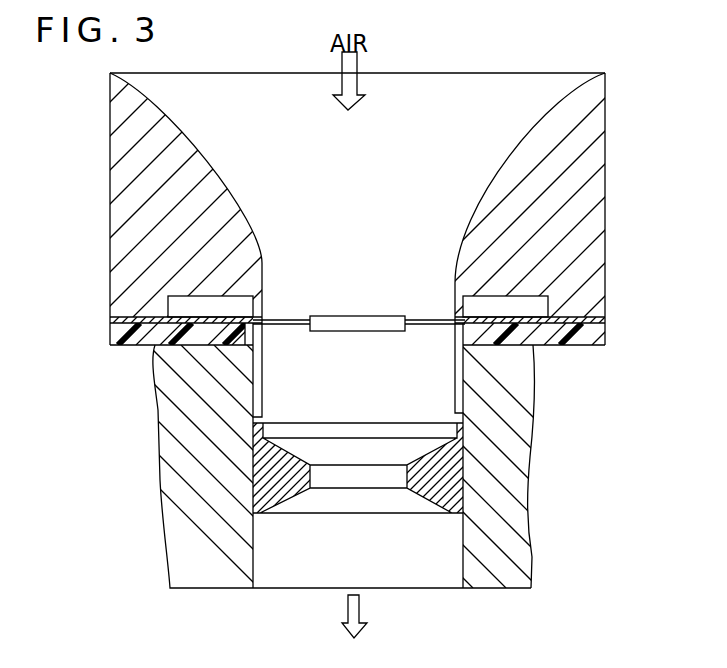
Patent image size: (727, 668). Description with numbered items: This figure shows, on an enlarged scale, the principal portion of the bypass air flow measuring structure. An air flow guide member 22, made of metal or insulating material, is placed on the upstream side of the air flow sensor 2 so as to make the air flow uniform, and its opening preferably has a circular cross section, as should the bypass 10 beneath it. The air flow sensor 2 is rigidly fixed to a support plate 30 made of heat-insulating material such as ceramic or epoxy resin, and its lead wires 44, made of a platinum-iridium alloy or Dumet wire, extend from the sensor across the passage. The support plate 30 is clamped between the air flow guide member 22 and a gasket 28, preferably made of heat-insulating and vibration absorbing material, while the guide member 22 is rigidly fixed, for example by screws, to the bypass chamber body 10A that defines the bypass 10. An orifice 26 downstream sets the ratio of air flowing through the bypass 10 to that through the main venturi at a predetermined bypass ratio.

The air flow guide member 22 is at (597, 172).
The air flow sensor 2 is at (353, 316).
The lead wires 44 is at (428, 316).
The bypass 10 is at (366, 383).
The support plate 30 is at (604, 319).
The gasket 28 is at (577, 345).
The bypass chamber body 10A is at (163, 416).
The orifice 26 is at (387, 480).